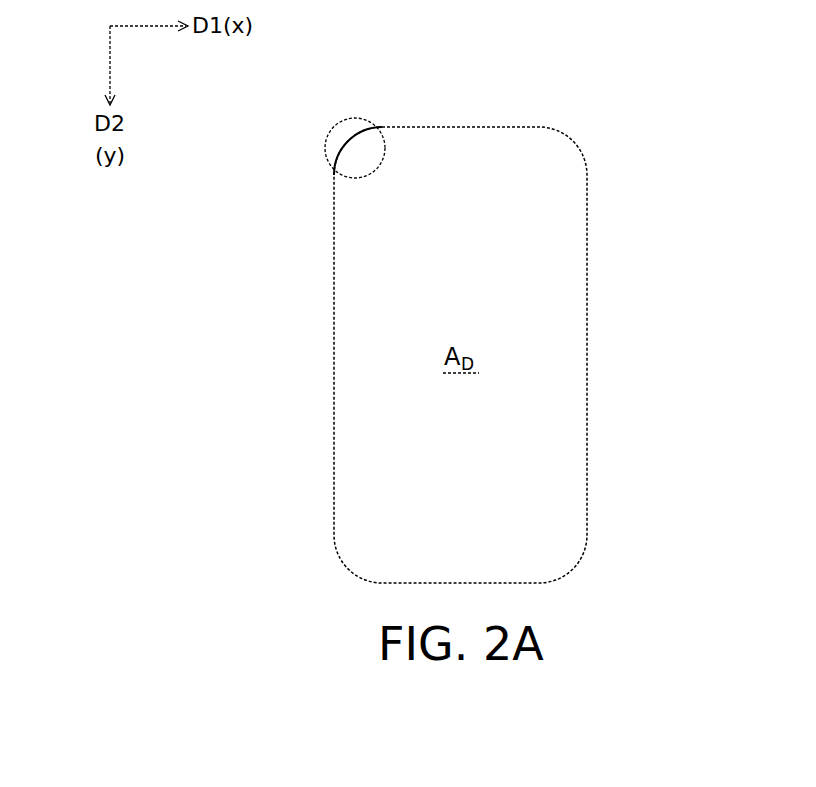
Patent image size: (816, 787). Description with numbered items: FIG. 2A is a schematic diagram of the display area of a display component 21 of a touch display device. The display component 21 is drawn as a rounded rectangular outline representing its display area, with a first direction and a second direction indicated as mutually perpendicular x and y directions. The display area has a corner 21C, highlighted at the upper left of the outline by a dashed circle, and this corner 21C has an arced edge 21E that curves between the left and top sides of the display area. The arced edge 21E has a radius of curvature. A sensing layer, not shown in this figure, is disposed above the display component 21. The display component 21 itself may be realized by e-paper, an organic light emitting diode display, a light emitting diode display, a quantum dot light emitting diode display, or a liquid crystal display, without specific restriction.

The display component 21 is at (587, 220).
The corner 21C is at (385, 150).
The arced edge 21E is at (350, 142).